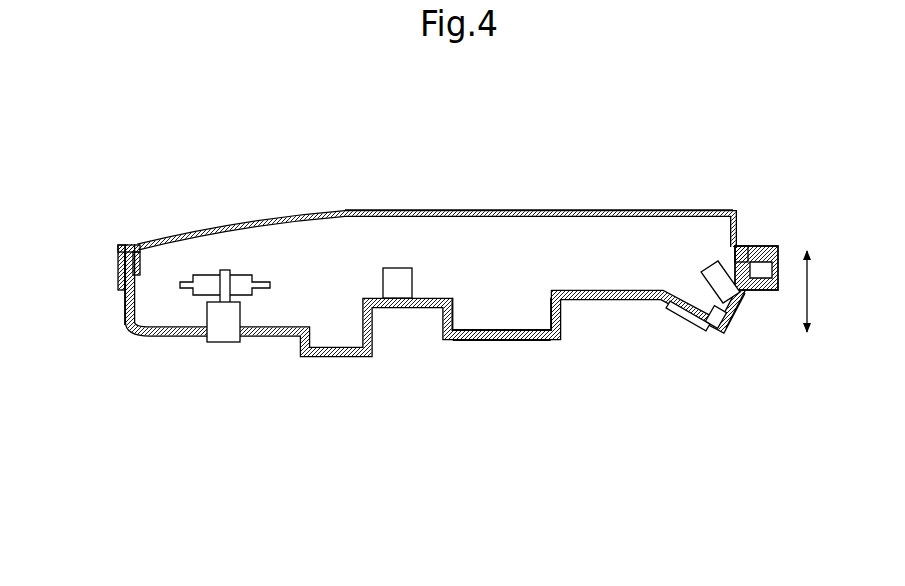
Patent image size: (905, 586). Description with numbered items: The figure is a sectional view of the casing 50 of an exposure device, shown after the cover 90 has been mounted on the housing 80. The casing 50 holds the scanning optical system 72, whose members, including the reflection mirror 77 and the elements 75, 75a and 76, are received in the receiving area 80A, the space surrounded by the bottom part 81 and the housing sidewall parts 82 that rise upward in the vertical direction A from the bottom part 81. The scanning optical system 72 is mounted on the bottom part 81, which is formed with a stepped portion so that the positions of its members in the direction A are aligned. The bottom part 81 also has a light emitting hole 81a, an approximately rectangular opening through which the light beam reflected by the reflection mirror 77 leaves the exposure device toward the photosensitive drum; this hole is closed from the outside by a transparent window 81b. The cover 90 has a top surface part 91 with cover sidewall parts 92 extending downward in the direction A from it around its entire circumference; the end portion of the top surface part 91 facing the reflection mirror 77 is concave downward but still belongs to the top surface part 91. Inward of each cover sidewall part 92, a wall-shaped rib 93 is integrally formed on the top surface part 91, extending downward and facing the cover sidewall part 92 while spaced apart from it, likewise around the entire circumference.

The casing 50 is at (449, 271).
The cover 90 is at (399, 209).
The top surface part 91 is at (485, 211).
The cover sidewall parts 92 is at (119, 268).
The ribs 93 is at (145, 257).
The housing sidewall parts 82 is at (124, 303).
The bottom part 81 is at (335, 358).
The housing 80 is at (476, 341).
The receiving area 80A is at (515, 312).
The scanning optical system 72 is at (460, 320).
The first port 75 is at (263, 287).
The port base 75a is at (224, 336).
The second port 76 is at (399, 290).
The reflection mirror 77 is at (705, 274).
The light emitting hole 81a is at (683, 309).
The transparent window 81b is at (693, 325).
The direction A is at (821, 291).